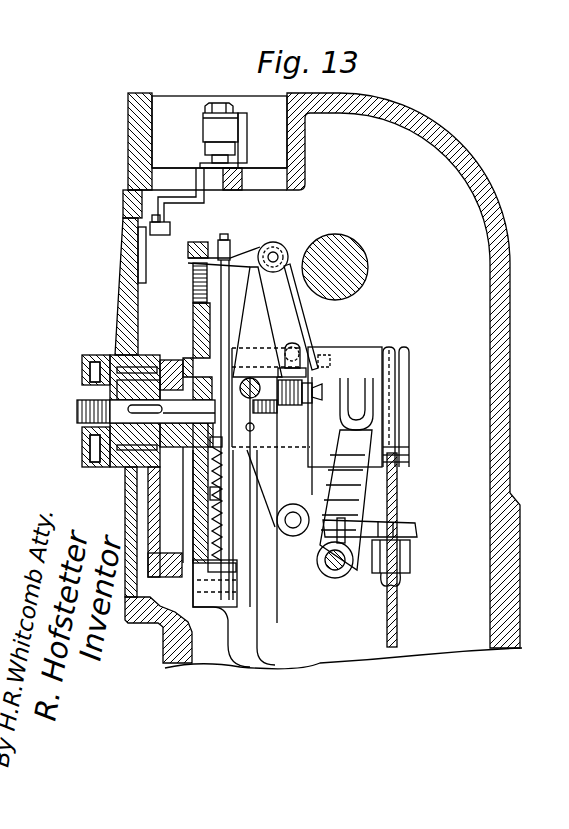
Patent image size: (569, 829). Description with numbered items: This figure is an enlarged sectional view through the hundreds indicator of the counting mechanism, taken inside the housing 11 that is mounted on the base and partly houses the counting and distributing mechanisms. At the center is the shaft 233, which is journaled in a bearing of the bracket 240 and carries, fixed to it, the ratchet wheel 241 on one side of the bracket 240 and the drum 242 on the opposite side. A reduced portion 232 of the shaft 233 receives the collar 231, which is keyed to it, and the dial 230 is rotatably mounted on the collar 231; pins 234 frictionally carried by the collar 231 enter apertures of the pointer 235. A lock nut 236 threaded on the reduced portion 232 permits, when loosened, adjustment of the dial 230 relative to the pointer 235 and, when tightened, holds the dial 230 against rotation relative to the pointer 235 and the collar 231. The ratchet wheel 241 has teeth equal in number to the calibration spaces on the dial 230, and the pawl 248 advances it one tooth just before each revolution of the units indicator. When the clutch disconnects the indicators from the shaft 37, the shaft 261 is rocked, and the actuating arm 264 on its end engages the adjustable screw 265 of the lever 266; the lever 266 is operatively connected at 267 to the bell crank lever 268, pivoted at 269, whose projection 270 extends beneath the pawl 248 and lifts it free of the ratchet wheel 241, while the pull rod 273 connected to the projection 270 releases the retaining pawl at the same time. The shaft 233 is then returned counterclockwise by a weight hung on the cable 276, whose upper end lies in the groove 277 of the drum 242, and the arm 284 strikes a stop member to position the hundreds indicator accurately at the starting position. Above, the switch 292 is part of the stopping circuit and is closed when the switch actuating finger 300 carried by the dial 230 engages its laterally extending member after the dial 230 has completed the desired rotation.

The housing 11 is at (510, 226).
The shaft 37 is at (352, 272).
The dial 230 is at (138, 245).
The collar 231 is at (185, 358).
The reduced portion 232 is at (100, 393).
The shaft 233 is at (190, 343).
The pins 234 is at (113, 365).
The pointer 235 is at (127, 282).
The lock nut 236 is at (92, 448).
The bracket 240 is at (262, 547).
The ratchet wheel 241 is at (208, 285).
The drum 242 is at (358, 355).
The pawl 248 is at (198, 240).
The shaft 261 is at (358, 567).
The actuating arm 264 is at (360, 482).
The adjustable screw 265 is at (333, 397).
The lever 266 is at (360, 493).
The operative connection 267 is at (301, 350).
The bell crank lever 268 is at (359, 256).
The pivot 269 is at (285, 237).
The projection 270 is at (172, 262).
The pull rod 273 is at (223, 558).
The cable 276 is at (398, 606).
The groove 277 is at (393, 392).
The arm 284 is at (170, 560).
The switch 292 is at (270, 146).
The switch actuating finger 300 is at (152, 230).